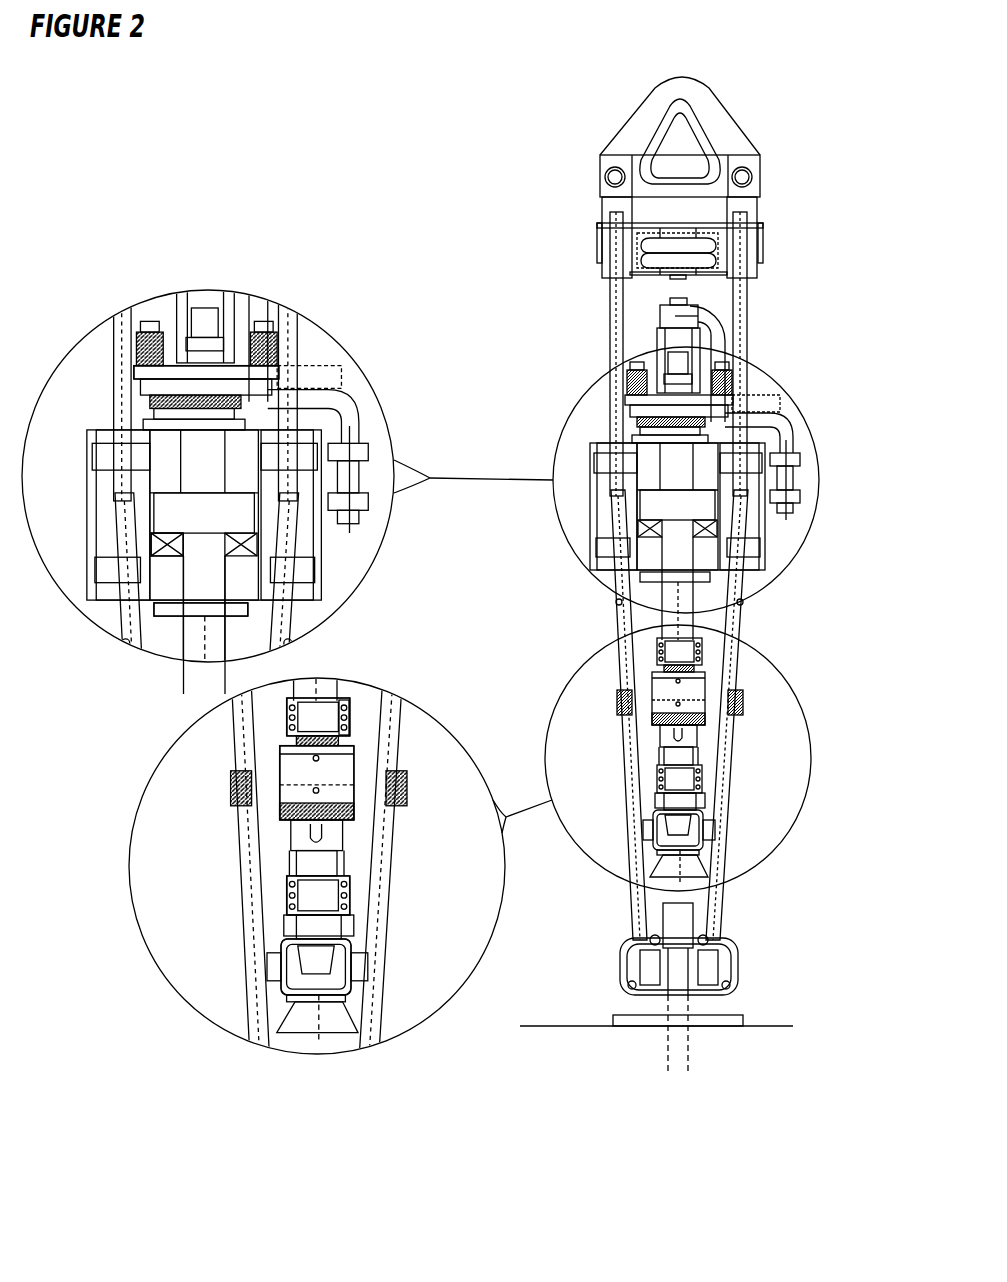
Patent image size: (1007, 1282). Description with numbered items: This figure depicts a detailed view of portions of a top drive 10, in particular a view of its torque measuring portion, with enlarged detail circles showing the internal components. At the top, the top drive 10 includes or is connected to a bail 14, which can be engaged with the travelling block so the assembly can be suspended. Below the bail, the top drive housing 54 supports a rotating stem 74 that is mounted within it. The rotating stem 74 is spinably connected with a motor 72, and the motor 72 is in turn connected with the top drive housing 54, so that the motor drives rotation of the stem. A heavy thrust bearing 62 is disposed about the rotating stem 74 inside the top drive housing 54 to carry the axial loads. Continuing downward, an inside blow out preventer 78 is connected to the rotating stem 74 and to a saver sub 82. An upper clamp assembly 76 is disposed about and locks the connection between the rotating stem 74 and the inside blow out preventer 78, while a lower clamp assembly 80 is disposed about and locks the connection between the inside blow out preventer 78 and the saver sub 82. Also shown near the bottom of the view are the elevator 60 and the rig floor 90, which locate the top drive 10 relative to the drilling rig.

The top drive 10 is at (731, 70).
The bail 14 is at (638, 120).
The top drive housing 54 is at (148, 603).
The elevator 60 is at (737, 970).
The heavy thrust bearing 62 is at (155, 545).
The motor 72 is at (153, 415).
The rotating stem 74 is at (226, 622).
The upper clamp assembly 76 is at (348, 713).
The inside blow out preventer 78 is at (350, 770).
The lower clamp assembly 80 is at (348, 890).
The saver sub 82 is at (283, 983).
The rig floor 90 is at (743, 1022).